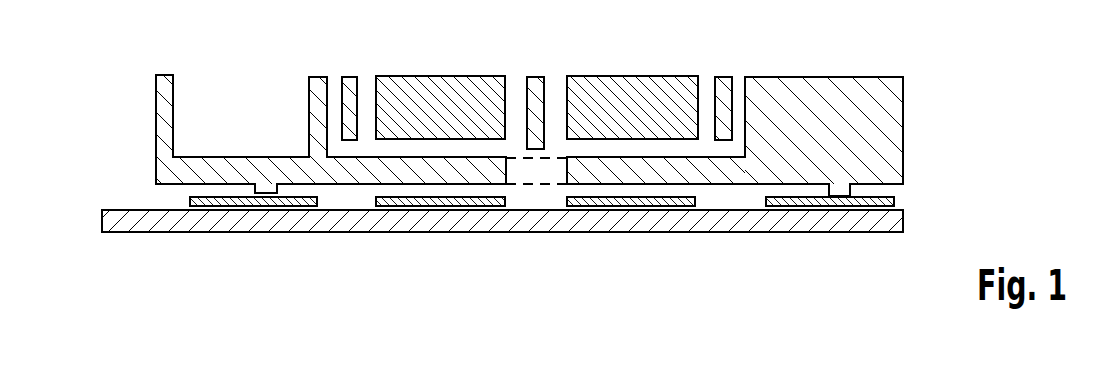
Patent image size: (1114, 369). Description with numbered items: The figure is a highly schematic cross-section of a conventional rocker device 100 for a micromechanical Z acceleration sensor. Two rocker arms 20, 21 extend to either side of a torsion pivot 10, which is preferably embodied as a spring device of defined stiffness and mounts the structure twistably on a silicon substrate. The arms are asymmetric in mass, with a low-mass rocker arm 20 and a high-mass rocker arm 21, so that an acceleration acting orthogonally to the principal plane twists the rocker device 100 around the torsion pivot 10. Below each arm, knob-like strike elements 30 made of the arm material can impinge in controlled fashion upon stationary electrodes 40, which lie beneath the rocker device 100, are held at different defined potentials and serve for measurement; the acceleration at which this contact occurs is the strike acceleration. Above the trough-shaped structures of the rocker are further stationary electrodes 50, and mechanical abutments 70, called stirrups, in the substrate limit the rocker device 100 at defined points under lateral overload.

The rocker device 100 is at (187, 253).
The rocker arm 20 is at (156, 118).
The rocker arm 21 is at (903, 132).
The strike element 30 is at (255, 190).
The electrode 40 is at (267, 203).
The stationary electrode 50 is at (441, 76).
The mechanical abutment 70 is at (349, 77).
The torsion pivot 10 is at (537, 77).